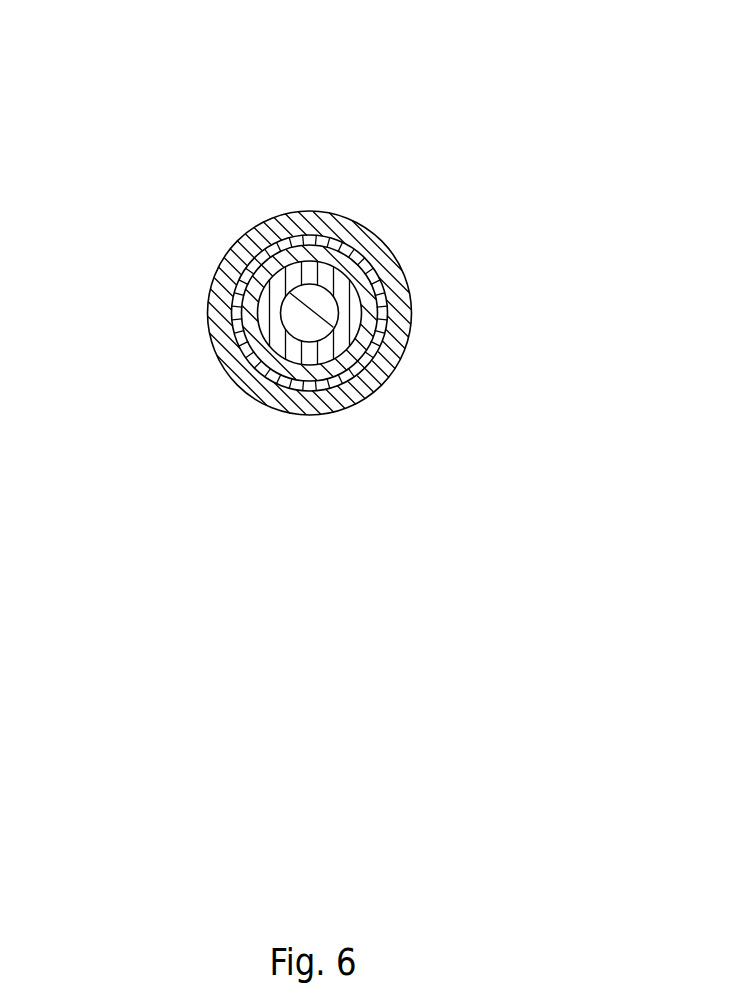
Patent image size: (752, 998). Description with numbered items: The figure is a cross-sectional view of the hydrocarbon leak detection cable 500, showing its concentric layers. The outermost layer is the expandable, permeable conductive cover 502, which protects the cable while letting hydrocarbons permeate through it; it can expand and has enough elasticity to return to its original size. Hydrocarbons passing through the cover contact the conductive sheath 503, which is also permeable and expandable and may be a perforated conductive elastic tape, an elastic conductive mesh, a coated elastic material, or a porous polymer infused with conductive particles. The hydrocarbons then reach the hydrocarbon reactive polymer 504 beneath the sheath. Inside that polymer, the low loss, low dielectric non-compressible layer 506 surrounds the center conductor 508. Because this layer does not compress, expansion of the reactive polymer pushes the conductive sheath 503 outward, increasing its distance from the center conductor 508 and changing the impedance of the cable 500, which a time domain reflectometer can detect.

The hydrocarbon leak detection cable 500 is at (478, 107).
The expandable, permeable conductive cover 502 is at (312, 212).
The conductive sheath 503 is at (378, 257).
The hydrocarbon reactive polymer 504 is at (367, 322).
The low loss, low dielectric non-compressible layer 506 is at (304, 357).
The center conductor 508 is at (308, 311).